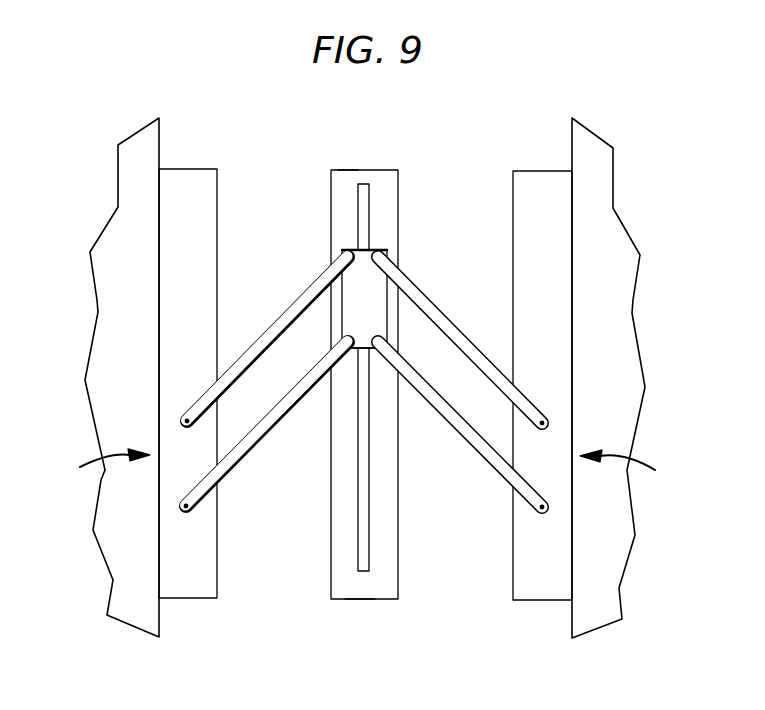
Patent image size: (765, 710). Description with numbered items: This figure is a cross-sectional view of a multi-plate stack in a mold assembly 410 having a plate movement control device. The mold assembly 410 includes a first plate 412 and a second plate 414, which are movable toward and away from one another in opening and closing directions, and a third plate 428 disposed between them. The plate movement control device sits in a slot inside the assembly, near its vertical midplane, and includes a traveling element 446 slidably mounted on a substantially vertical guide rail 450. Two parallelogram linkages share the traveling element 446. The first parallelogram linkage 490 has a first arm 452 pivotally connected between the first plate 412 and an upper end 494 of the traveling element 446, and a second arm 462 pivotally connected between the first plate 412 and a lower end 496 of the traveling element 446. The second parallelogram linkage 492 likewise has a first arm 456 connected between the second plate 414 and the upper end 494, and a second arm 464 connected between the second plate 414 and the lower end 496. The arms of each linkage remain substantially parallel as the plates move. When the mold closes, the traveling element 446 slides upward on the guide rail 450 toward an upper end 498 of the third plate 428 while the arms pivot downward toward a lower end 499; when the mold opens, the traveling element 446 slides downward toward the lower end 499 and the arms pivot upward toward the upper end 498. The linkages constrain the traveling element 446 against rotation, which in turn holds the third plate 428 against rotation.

The mold assembly 410 is at (494, 88).
The first plate 412 is at (198, 172).
The second plate 414 is at (520, 171).
The third plate 428 is at (378, 170).
The traveling element 446 is at (372, 252).
The guide rail 450 is at (357, 218).
The first arm of first parallelogram linkage 452 is at (302, 291).
The first arm of second parallelogram linkage 456 is at (448, 318).
The second arm of first parallelogram linkage 462 is at (273, 437).
The second arm of second parallelogram linkage 464 is at (447, 427).
The first parallelogram linkage 490 is at (95, 468).
The second parallelogram linkage 492 is at (633, 468).
The upper end of traveling element 494 is at (352, 252).
The lower end of traveling element 496 is at (354, 342).
The upper end of third plate 498 is at (347, 170).
The lower end of third plate 499 is at (360, 600).